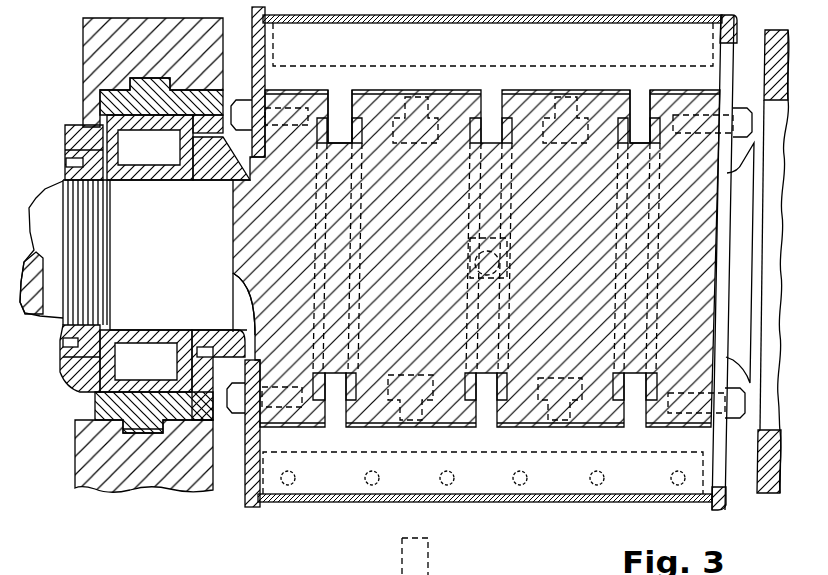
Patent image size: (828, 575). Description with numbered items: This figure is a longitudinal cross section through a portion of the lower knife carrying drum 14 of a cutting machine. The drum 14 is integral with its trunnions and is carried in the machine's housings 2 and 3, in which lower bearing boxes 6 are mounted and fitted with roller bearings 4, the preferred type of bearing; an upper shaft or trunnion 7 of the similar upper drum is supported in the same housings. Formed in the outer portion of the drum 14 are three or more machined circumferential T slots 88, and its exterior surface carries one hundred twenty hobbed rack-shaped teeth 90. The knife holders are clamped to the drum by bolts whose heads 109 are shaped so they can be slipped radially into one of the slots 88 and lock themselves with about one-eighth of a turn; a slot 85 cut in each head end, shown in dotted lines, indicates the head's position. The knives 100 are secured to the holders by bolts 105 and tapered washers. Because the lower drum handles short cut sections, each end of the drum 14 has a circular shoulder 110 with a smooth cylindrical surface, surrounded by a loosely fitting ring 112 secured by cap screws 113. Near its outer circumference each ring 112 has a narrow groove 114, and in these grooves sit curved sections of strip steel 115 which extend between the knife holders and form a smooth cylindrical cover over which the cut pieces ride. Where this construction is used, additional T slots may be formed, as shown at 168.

The housing 2 is at (88, 458).
The housing 3 is at (768, 494).
The roller bearings 4 is at (129, 357).
The lower bearing box 6 is at (105, 405).
The shaft or trunnion 7 is at (155, 255).
The lower knife carrying drum 14 is at (476, 258).
The slot 85 is at (494, 263).
The circumferential T slot 88 is at (331, 110).
The teeth 90 is at (448, 90).
The knife 100 is at (403, 565).
The bolt 105 is at (264, 562).
The bolt head 109 is at (509, 245).
The circular shoulder 110 is at (233, 277).
The ring 112 is at (249, 502).
The cap screw 113 is at (234, 414).
The groove 114 is at (722, 504).
The strip steel section 115 is at (549, 24).
The additional T slot 168 is at (568, 380).